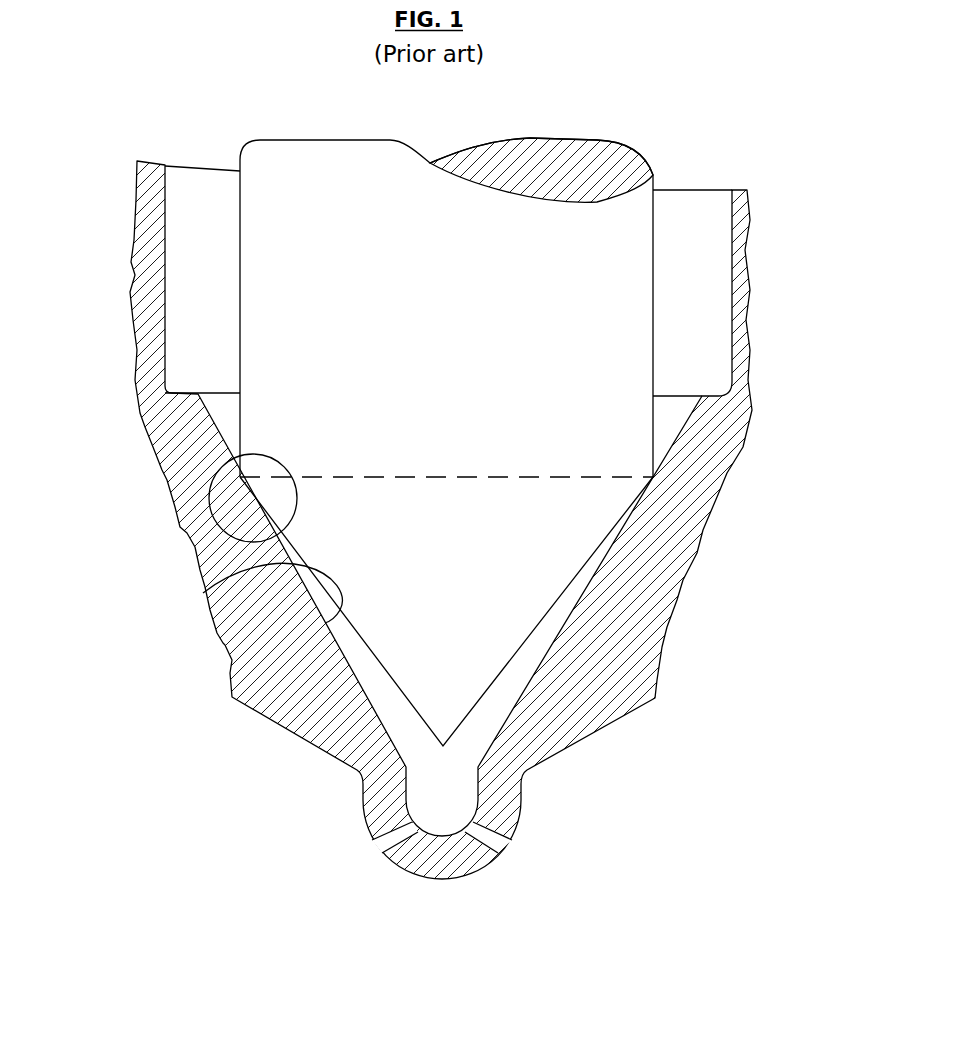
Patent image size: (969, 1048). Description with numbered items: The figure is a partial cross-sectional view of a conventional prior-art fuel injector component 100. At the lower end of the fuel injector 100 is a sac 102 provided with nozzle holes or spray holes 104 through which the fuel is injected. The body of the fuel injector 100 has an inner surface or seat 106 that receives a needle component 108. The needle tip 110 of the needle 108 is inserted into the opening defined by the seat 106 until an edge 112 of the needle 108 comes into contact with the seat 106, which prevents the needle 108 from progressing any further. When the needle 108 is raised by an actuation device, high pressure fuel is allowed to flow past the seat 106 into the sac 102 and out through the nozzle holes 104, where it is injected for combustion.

The fuel injector component 100 is at (635, 652).
The sac 102 is at (470, 793).
The nozzle holes 104 is at (507, 850).
The seat 106 is at (207, 592).
The needle component 108 is at (335, 296).
The needle tip 110 is at (413, 641).
The edge 112 is at (203, 512).